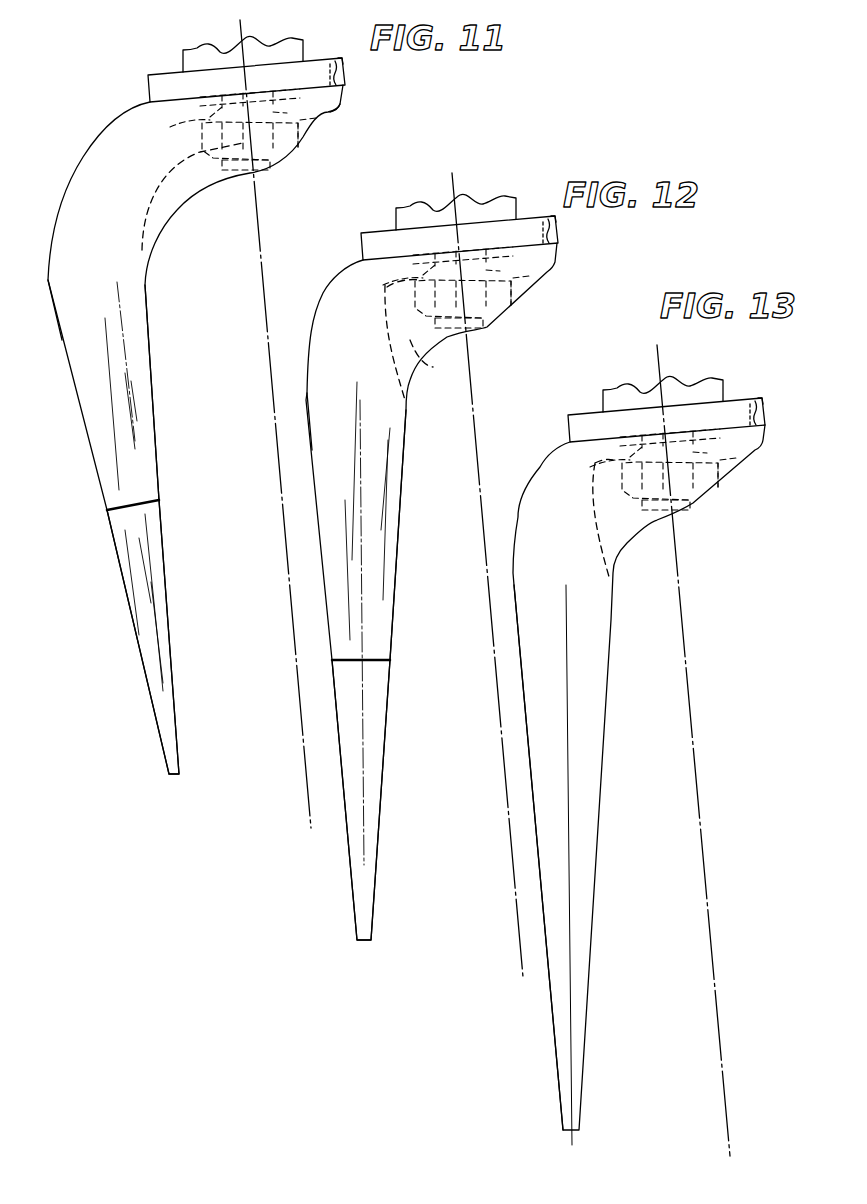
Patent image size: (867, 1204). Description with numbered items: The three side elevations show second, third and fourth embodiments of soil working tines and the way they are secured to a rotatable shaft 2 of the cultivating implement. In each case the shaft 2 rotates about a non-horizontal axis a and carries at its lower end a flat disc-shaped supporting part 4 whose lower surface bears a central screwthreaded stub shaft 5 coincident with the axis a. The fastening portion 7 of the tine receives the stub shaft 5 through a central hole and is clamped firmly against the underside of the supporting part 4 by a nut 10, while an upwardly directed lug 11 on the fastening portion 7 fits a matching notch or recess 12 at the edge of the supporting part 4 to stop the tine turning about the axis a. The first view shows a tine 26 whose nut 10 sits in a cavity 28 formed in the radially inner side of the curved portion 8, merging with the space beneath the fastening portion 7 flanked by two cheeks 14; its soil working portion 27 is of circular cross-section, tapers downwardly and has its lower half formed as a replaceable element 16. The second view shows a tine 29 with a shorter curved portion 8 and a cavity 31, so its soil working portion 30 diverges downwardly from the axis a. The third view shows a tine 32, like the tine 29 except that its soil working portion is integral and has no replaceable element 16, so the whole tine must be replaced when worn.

In FIG. 11, the shaft 2 is at (183, 56).
In FIG. 12, the shaft 2 is at (408, 210).
In FIG. 13, the shaft 2 is at (612, 400).
In FIG. 11, the supporting part 4 is at (148, 85).
In FIG. 12, the supporting part 4 is at (363, 245).
In FIG. 13, the supporting part 4 is at (568, 425).
In FIG. 11, the screwthreaded stub shaft 5 is at (235, 148).
In FIG. 12, the screwthreaded stub shaft 5 is at (480, 335).
In FIG. 13, the screwthreaded stub shaft 5 is at (687, 513).
In FIG. 11, the fastening portion 7 is at (337, 107).
In FIG. 11, the curved portion 8 is at (83, 155).
In FIG. 12, the curved portion 8 is at (325, 313).
In FIG. 13, the curved portion 8 is at (639, 785).
In FIG. 11, the nut 10 is at (270, 167).
In FIG. 12, the nut 10 is at (510, 303).
In FIG. 13, the nut 10 is at (717, 490).
In FIG. 11, the lug 11 is at (345, 78).
In FIG. 12, the lug 11 is at (558, 230).
In FIG. 13, the lug 11 is at (768, 417).
In FIG. 11, the notch or recess 12 is at (338, 60).
In FIG. 12, the notch or recess 12 is at (547, 213).
In FIG. 13, the notch or recess 12 is at (757, 397).
In FIG. 11, the cheeks 14 is at (317, 137).
In FIG. 12, the cheeks 14 is at (537, 280).
In FIG. 13, the cheeks 14 is at (747, 460).
In FIG. 11, the replaceable element 16 is at (127, 578).
In FIG. 12, the replaceable element 16 is at (376, 830).
In FIG. 11, the tine 26 is at (92, 262).
In FIG. 11, the soil working portion 27 is at (160, 358).
In FIG. 11, the cavity 28 is at (178, 177).
In FIG. 12, the tine 29 is at (347, 396).
In FIG. 12, the soil working portion 30 is at (402, 537).
In FIG. 12, the cavity 31 is at (420, 350).
In FIG. 13, the cavity 31 is at (617, 523).
In FIG. 13, the tine 32 is at (530, 607).
In FIG. 11, the axis a is at (262, 255).
In FIG. 12, the axis a is at (469, 419).
In FIG. 13, the axis a is at (678, 607).